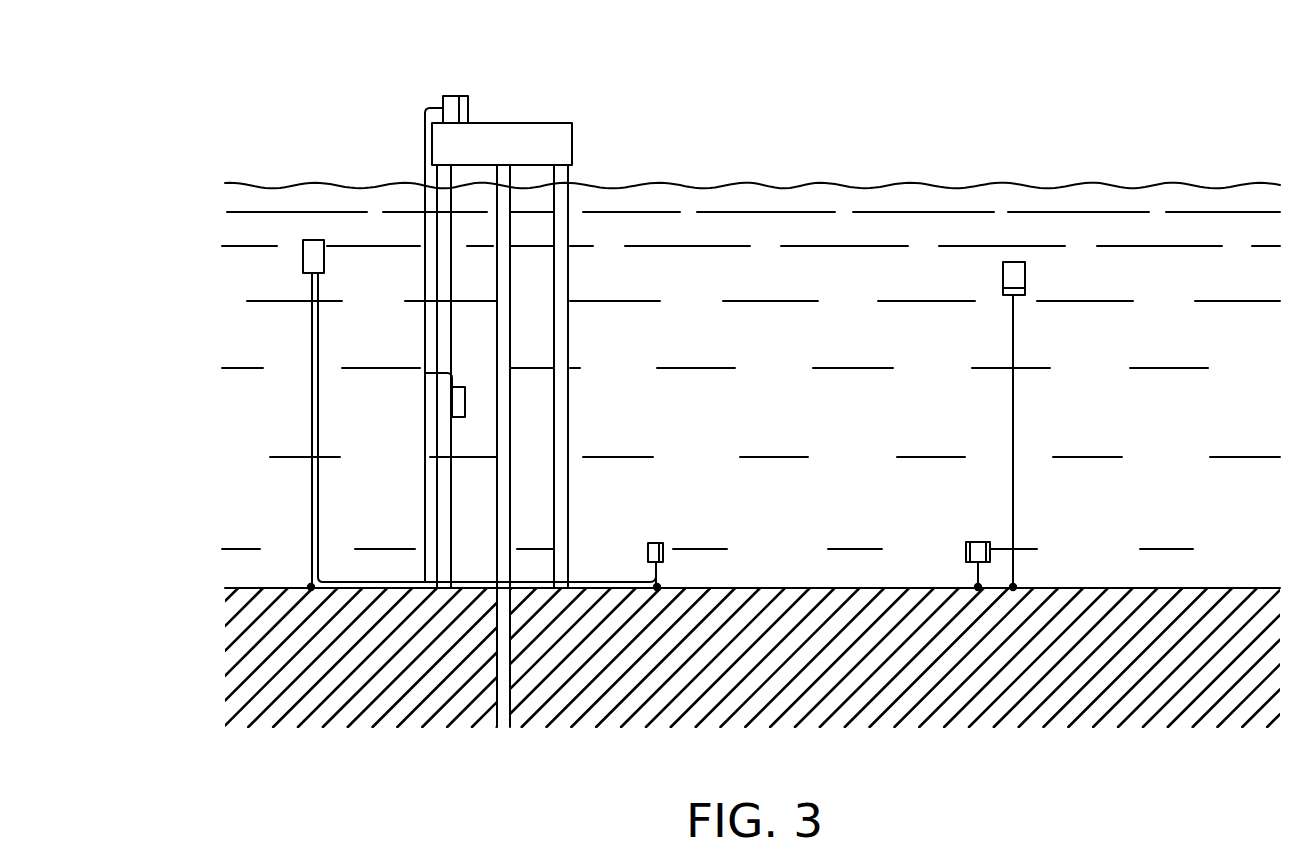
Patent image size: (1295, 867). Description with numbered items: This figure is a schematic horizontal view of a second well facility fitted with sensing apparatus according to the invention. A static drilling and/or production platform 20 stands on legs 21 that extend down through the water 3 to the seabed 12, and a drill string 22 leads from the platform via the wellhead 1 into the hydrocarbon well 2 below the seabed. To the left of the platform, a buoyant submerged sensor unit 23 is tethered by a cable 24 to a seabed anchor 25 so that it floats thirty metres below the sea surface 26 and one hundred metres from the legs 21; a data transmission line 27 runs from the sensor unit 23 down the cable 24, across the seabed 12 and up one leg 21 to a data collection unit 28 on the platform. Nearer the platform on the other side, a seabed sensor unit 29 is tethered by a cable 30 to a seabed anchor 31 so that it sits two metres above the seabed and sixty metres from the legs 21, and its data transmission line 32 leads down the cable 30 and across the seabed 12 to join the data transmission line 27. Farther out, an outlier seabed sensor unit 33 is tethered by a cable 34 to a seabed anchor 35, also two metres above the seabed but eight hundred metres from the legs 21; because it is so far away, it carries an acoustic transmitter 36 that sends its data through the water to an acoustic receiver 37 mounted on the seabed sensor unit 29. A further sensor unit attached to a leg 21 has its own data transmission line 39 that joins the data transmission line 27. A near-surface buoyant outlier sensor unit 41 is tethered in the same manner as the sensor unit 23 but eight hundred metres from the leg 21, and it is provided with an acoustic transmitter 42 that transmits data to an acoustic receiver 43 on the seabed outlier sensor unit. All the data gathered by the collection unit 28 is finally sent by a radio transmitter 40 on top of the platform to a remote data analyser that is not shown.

The wellhead 1 is at (535, 580).
The hydrocarbon well 2 is at (510, 697).
The water body 3 is at (1142, 197).
The seabed 12 is at (1112, 587).
The static drilling and/or production platform 20 is at (563, 142).
The legs 21 is at (442, 265).
The drill string 22 is at (503, 417).
The buoyant submerged sensor unit 23 is at (303, 262).
The cable 24 is at (312, 393).
The seabed anchor 25 is at (310, 587).
The water surface 26 is at (832, 183).
The data transmission line 27 is at (318, 405).
The data collection unit 28 is at (452, 96).
The seabed sensor unit 29 is at (653, 543).
The cable 30 is at (657, 572).
The seabed anchor 31 is at (657, 590).
The data transmission line 32 is at (615, 580).
The outlier seabed sensor unit 33 is at (978, 542).
The cable 34 is at (975, 570).
The seabed anchor 35 is at (978, 590).
The acoustic transmitter 36 is at (966, 550).
The acoustic receiver 37 is at (663, 548).
The data transmission line 39 is at (455, 372).
The radio transmitter 40 is at (468, 105).
The near-surface buoyant outlier sensor unit 41 is at (1018, 272).
The acoustic transmitter 42 is at (1018, 297).
The acoustic receiver 43 is at (990, 546).